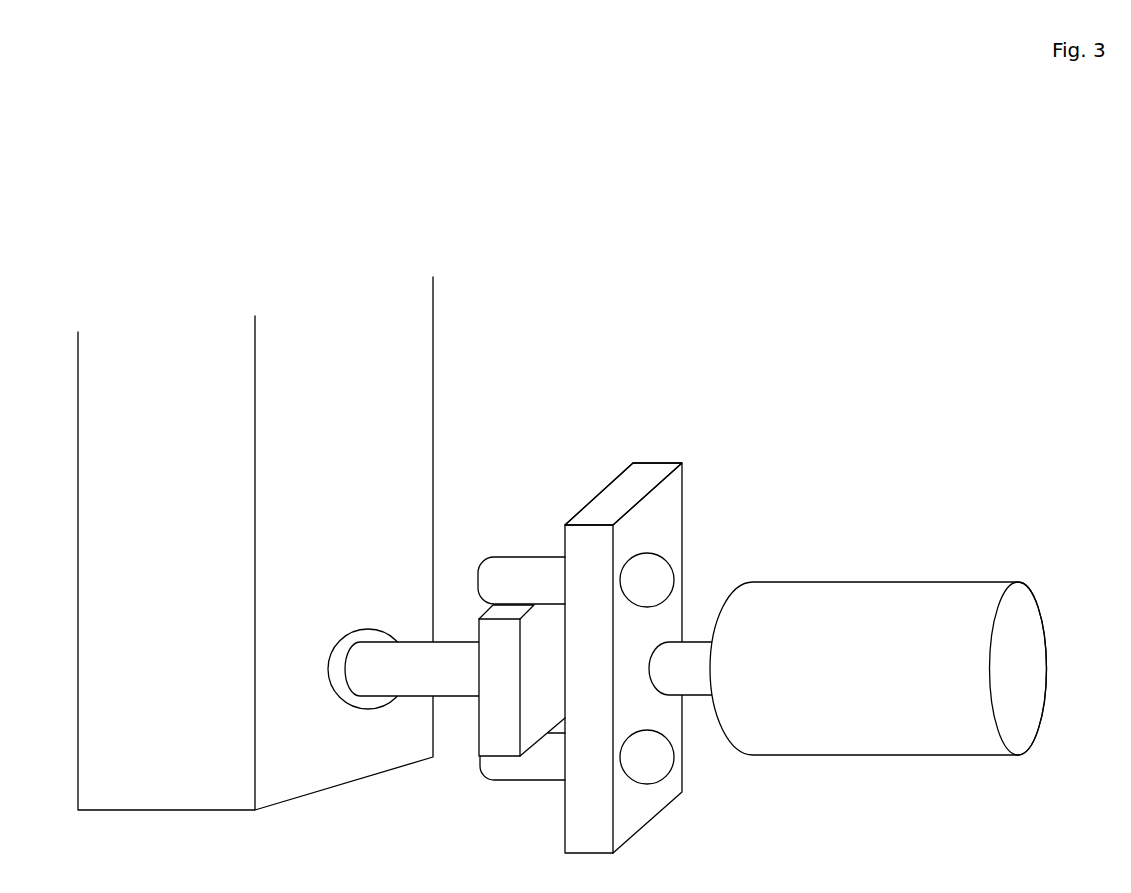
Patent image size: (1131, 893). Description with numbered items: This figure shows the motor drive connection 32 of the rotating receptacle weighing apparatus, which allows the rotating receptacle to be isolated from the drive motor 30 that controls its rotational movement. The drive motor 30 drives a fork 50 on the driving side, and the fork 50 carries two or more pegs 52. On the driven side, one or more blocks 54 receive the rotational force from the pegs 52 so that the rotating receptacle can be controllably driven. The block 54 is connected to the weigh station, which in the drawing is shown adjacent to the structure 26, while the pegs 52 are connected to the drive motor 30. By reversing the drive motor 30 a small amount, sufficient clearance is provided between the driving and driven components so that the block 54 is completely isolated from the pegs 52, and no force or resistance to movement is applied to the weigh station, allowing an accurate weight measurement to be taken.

The support structure 26 is at (442, 358).
The drive motor 30 is at (901, 558).
The motor drive connection 32 is at (625, 442).
The fork 50 is at (653, 462).
The pegs 52 is at (510, 557).
The block 54 is at (478, 732).